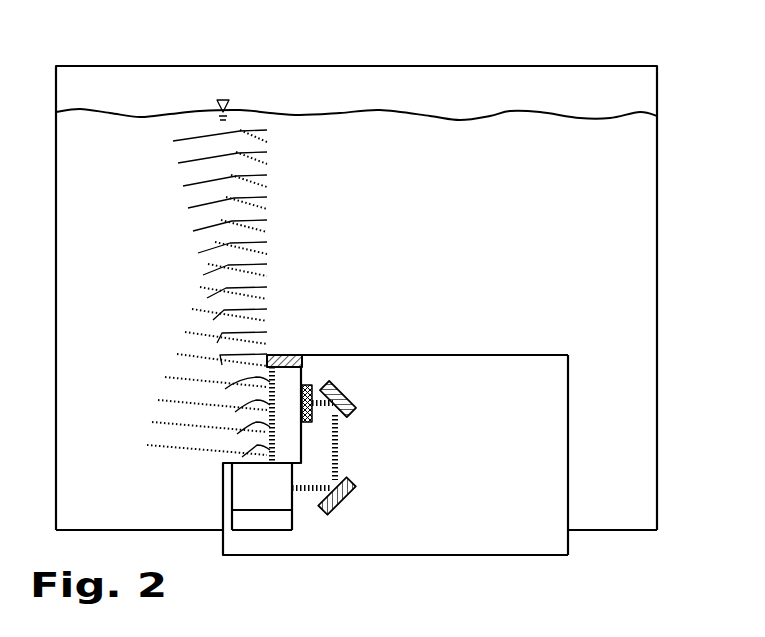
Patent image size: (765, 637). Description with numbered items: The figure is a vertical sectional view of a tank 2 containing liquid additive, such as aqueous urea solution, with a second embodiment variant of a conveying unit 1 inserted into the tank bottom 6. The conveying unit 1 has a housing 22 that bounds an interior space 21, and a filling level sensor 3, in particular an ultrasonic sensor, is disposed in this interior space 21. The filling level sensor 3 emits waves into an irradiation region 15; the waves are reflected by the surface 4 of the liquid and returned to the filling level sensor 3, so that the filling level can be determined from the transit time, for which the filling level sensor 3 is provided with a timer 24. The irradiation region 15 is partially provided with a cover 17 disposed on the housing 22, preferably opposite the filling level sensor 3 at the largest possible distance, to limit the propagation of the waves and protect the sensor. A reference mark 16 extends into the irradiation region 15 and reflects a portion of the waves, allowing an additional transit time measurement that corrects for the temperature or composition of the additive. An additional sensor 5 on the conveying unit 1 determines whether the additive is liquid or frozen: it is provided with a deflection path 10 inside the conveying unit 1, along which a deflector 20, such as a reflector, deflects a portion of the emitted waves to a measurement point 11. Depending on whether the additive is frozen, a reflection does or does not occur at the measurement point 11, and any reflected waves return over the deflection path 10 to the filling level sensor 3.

The conveying unit 1 is at (490, 355).
The tank 2 is at (660, 53).
The filling level sensor 3 is at (292, 520).
The surface 4 is at (459, 119).
The sensor 5 is at (357, 443).
The tank bottom 6 is at (616, 531).
The deflection path 10 is at (338, 437).
The measurement point 11 is at (272, 406).
The irradiation region 15 is at (236, 399).
The reference mark 16 is at (312, 385).
The cover 17 is at (283, 347).
The deflector 20 is at (355, 408).
The interior space 21 is at (527, 375).
The housing 22 is at (568, 366).
The timer 24 is at (257, 520).